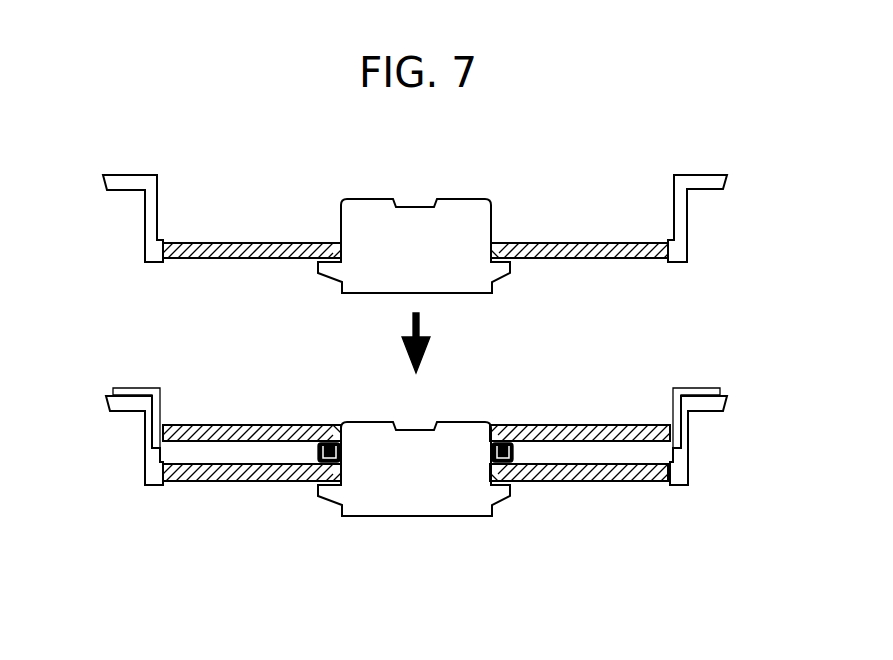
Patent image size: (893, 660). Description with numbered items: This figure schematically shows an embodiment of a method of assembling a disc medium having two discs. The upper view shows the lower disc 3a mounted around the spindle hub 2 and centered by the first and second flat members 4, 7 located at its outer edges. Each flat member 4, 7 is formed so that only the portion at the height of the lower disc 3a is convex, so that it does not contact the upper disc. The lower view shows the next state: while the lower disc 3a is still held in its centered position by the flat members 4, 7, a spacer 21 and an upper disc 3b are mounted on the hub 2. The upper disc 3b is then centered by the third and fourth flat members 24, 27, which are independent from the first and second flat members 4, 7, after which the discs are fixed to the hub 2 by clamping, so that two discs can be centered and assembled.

The spindle hub 2 is at (447, 218).
The lower disc 3a is at (532, 250).
The upper disc 3b is at (267, 432).
The first flat member 4 is at (142, 247).
The second flat member 7 is at (688, 242).
The spacer 21 is at (328, 440).
The third flat member 24 is at (157, 390).
The fourth flat member 27 is at (675, 390).